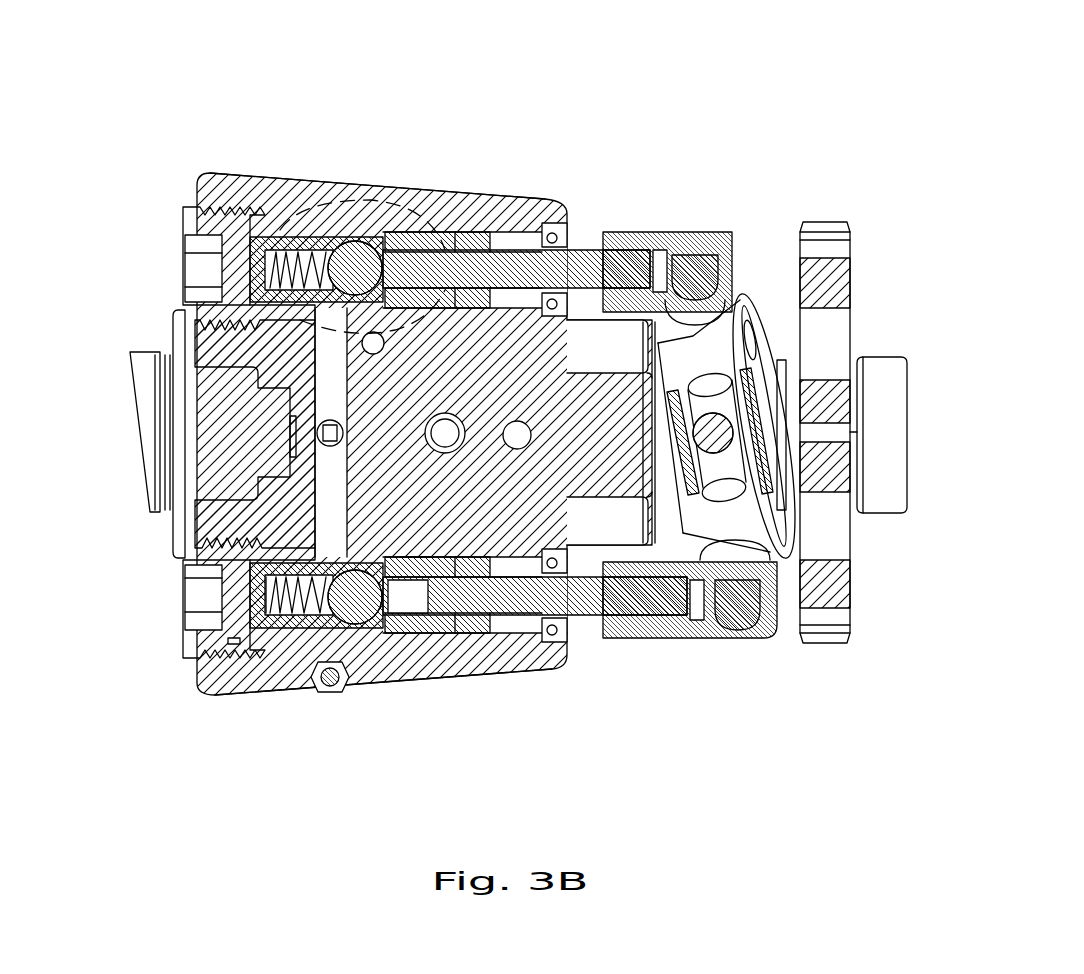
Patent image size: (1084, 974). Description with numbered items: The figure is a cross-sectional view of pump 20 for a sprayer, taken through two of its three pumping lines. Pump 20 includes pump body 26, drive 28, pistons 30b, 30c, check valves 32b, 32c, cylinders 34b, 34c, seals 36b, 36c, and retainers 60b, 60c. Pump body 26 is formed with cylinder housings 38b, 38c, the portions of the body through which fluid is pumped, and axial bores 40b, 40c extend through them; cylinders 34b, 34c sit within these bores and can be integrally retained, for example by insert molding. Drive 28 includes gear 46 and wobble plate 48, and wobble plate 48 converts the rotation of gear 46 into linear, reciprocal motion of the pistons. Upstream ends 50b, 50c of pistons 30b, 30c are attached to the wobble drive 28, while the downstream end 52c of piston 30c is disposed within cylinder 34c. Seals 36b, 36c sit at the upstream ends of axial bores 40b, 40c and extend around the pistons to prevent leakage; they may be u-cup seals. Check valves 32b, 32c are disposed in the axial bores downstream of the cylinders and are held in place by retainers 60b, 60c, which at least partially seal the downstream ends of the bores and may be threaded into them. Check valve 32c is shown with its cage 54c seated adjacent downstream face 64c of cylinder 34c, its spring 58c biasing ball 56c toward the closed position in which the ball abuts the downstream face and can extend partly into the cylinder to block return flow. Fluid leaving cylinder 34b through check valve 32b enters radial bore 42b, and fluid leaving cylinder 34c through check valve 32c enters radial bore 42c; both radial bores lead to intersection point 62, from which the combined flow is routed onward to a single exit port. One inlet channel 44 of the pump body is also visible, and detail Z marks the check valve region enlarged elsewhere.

The pump 20 is at (278, 100).
The pump body 26 is at (491, 394).
The drive 28 is at (778, 185).
The piston 30b is at (513, 250).
The piston 30c is at (514, 623).
The check valve 32b is at (268, 228).
The check valve 32c is at (283, 645).
The cylinder 34b is at (462, 238).
The cylinder 34c is at (465, 630).
The seal 36b is at (571, 232).
The seal 36c is at (560, 632).
The cylinder housing 38b is at (398, 192).
The cylinder housing 38c is at (374, 696).
The axial bore 40b is at (516, 306).
The axial bore 40c is at (518, 553).
The radial bore 42b is at (331, 379).
The radial bore 42c is at (330, 513).
The inlet channel 44 is at (444, 440).
The gear 46 is at (848, 284).
The wobble plate 48 is at (733, 517).
The upstream end 50b is at (648, 262).
The upstream end 50c is at (690, 600).
The downstream end 52c is at (443, 609).
The cage 54c is at (253, 574).
The ball 56c is at (325, 693).
The spring 58c is at (230, 647).
The retainer 60b is at (192, 216).
The retainer 60c is at (200, 640).
The intersection point 62 is at (340, 433).
The downstream face 64c is at (407, 557).
The detail Z is at (350, 165).